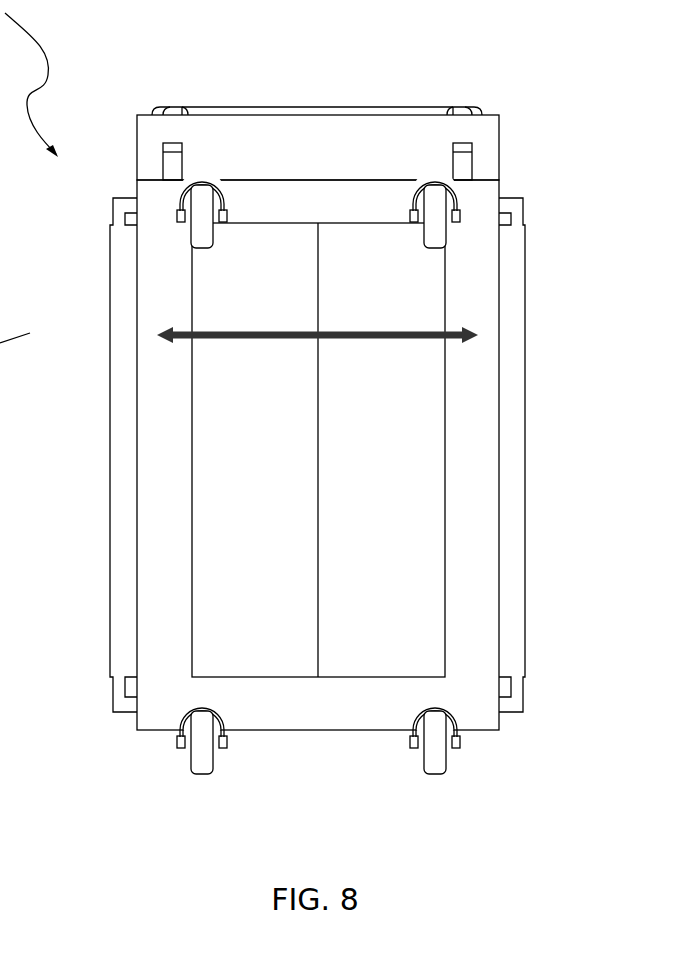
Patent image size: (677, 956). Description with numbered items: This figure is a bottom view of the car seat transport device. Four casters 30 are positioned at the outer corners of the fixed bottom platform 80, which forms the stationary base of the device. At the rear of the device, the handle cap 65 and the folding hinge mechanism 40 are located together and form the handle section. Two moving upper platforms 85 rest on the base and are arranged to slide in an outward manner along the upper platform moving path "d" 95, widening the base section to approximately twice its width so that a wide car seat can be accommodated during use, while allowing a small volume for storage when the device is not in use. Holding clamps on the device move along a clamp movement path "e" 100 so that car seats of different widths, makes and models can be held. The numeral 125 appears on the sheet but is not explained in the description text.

The caster 30 is at (202, 195).
The folding hinge mechanism 40 is at (422, 150).
The handle cap 65 is at (248, 110).
The fixed bottom platform 80 is at (465, 445).
The moving upper platform 85 is at (257, 397).
The upper platform moving path "d" 95 is at (440, 328).
The component (off-page) 125 is at (19, 765).
The clamp movement path "e" 100 is at (13, 815).